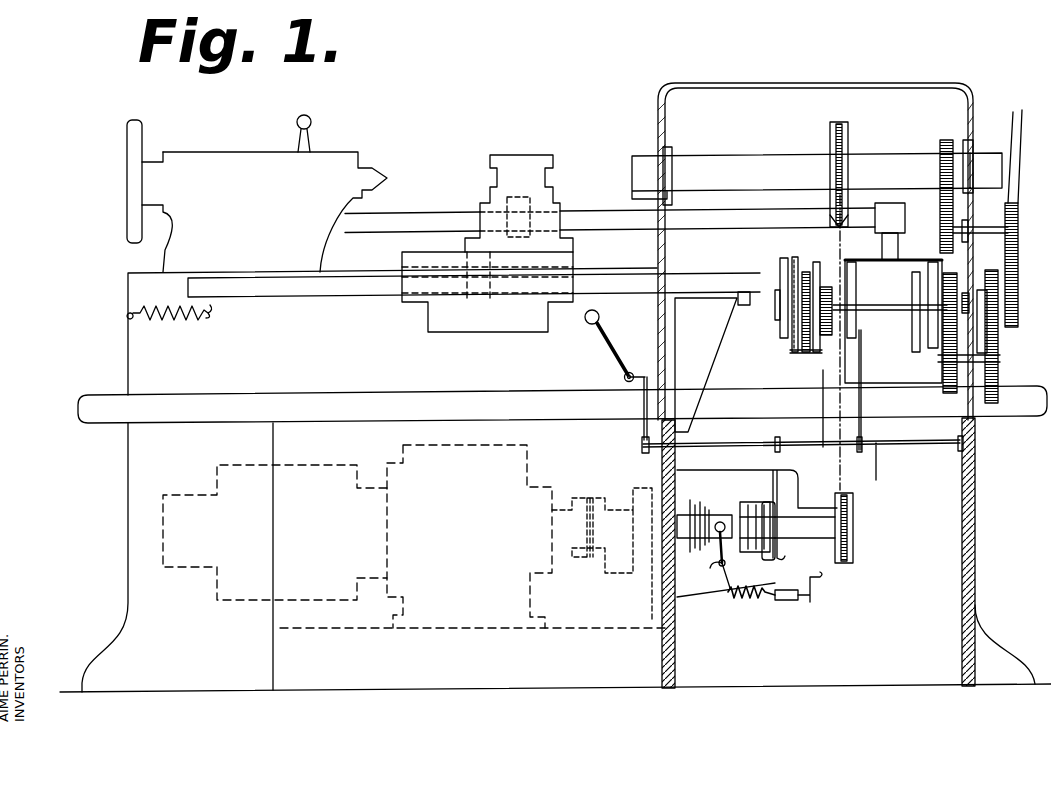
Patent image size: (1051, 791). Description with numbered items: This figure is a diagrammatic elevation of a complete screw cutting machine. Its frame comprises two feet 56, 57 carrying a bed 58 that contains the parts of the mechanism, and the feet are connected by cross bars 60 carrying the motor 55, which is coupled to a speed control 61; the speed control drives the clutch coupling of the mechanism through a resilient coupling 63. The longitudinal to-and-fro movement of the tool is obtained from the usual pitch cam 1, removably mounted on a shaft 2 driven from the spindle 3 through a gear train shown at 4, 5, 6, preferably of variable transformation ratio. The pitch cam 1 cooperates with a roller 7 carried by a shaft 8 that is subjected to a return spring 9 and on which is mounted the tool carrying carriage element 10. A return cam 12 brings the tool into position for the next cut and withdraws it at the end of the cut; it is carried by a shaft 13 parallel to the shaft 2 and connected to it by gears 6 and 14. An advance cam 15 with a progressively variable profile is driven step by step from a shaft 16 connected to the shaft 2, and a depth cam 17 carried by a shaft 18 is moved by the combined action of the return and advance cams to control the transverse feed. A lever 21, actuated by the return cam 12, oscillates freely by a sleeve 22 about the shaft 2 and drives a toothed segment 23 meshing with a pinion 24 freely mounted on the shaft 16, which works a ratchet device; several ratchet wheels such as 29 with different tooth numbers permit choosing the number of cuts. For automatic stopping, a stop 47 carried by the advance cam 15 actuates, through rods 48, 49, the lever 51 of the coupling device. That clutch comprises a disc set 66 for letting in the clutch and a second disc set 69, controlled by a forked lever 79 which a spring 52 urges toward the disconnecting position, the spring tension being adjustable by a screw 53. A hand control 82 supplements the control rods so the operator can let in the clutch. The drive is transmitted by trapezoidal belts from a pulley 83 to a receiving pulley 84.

The pitch cam 1 is at (690, 323).
The shaft 2 is at (717, 362).
The spindle 3 is at (784, 166).
The gear train gear 4 is at (945, 140).
The gear train gear 5 is at (950, 223).
The gear train gear 6 is at (950, 389).
The roller 7 is at (741, 305).
The shaft 8 is at (605, 282).
The return spring 9 is at (166, 322).
The tool carrying carriage element 10 is at (487, 210).
The return cam 12 is at (935, 342).
The shaft 13 is at (958, 265).
The gear 14 is at (988, 410).
The advance cam 15 is at (852, 308).
The shaft 16 is at (823, 322).
The depth cam 17 is at (518, 197).
The shaft 18 is at (622, 212).
The lever 21 is at (902, 312).
The sleeve 22 is at (803, 425).
The toothed segment 23 is at (820, 333).
The pinion 24 is at (825, 287).
The ratchet wheel 29 is at (788, 267).
The stop 47 is at (862, 333).
The rod 48 is at (863, 400).
The rod 49 is at (877, 444).
The lever of coupling device 51 is at (773, 537).
The spring 52 is at (740, 590).
The screw 53 is at (820, 597).
The motor 55 is at (322, 570).
The foot 56 is at (192, 652).
The foot 57 is at (968, 662).
The bed 58 is at (332, 302).
The cross bars 60 is at (490, 650).
The speed control 61 is at (427, 580).
The resilient coupling 63 is at (587, 525).
The disc set 66 is at (752, 502).
The second disc set 69 is at (690, 507).
The forked lever 79 is at (722, 552).
The hand control 82 is at (613, 353).
The pulley 83 is at (853, 538).
The receiving pulley 84 is at (835, 122).